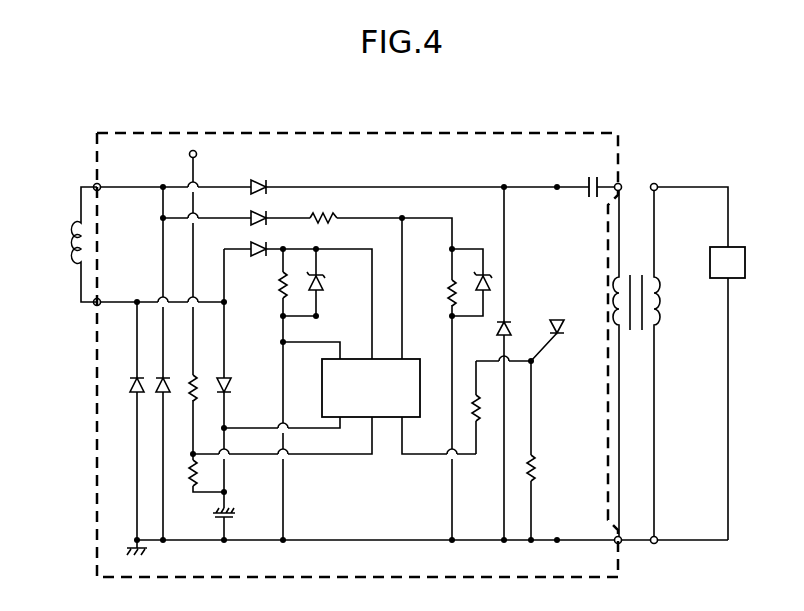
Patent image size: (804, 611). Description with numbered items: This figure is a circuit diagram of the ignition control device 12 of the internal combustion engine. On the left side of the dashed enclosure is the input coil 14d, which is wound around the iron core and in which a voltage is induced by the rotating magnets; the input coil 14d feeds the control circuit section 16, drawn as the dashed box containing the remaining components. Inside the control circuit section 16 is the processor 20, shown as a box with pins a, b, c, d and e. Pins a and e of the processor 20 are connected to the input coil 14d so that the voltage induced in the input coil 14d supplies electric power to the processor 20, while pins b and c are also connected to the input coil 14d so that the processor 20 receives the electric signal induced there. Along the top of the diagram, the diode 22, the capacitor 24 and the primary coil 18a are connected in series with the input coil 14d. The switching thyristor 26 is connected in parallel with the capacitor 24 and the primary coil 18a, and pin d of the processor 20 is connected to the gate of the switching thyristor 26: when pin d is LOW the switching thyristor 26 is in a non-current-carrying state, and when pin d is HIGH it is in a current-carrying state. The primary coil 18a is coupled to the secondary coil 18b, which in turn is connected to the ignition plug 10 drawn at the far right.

The ignition plug 10 is at (745, 247).
The ignition control device 12 is at (118, 124).
The input coil 14d is at (75, 262).
The control circuit section 16 is at (372, 128).
The primary coil 18a is at (622, 277).
The secondary coil 18b is at (657, 290).
The processor 20 is at (383, 418).
The diode 22 is at (260, 178).
The capacitor 24 is at (590, 176).
The switching thyristor 26 is at (555, 320).